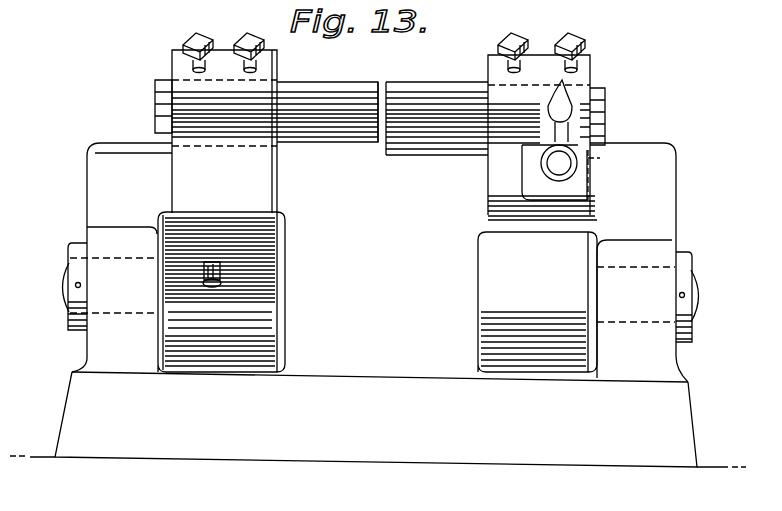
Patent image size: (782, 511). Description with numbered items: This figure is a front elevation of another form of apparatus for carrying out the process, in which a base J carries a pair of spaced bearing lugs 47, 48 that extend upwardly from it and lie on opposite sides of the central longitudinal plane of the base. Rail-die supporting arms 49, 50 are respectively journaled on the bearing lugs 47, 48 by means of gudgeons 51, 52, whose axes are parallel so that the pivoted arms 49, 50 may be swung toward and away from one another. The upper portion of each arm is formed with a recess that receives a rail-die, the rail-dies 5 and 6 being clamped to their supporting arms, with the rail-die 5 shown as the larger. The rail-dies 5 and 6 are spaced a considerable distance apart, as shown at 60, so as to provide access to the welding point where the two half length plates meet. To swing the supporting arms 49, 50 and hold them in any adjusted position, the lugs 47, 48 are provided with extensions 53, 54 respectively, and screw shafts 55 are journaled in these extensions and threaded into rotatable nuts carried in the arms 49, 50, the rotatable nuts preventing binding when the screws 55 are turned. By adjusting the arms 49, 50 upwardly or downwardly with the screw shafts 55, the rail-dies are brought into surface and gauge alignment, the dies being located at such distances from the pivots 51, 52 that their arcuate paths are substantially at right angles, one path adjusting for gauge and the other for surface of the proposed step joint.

The base J is at (522, 443).
The rail-die 5 is at (436, 87).
The rail-die 6 is at (322, 88).
The space between rail-dies 60 is at (381, 86).
The bearing lug 47 is at (108, 352).
The bearing lug 48 is at (660, 367).
The rail-die supporting arm 49 is at (262, 192).
The rail-die supporting arm 50 is at (500, 177).
The gudgeon 51 is at (63, 292).
The gudgeon 52 is at (697, 297).
The extension 53 is at (147, 168).
The extension 54 is at (655, 156).
The screw shaft 55 is at (220, 285).